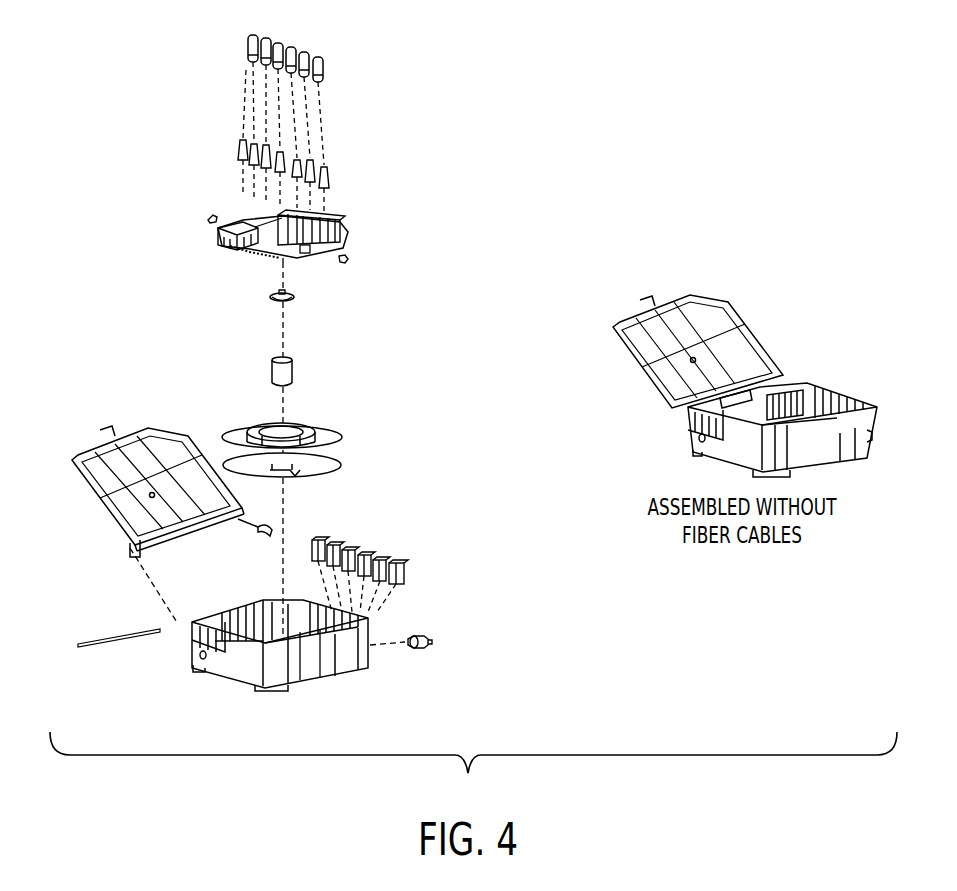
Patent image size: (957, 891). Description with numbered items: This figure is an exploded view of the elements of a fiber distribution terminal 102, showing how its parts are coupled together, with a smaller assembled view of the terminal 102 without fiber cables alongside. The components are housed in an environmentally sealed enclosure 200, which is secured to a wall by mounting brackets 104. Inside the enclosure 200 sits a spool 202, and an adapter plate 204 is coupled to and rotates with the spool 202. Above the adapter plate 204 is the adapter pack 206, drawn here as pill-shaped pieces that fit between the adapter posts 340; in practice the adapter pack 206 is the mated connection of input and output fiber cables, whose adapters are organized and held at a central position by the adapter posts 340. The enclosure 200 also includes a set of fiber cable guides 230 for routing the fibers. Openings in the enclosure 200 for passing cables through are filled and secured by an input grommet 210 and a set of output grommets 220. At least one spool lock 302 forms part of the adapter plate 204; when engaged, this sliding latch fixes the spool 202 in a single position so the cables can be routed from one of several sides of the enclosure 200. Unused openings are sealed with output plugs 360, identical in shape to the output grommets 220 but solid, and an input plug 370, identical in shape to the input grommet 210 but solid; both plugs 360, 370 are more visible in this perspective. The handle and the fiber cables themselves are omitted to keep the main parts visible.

The fiber distribution terminal 102 is at (817, 298).
The mounting brackets 104 is at (368, 670).
The enclosure 200 is at (350, 667).
The spool 202 is at (322, 421).
The adapter plate 204 is at (350, 242).
The adapter pack 206 is at (323, 63).
The input grommet 210 is at (432, 637).
The output grommets 220 is at (401, 562).
The fiber cable guides 230 is at (341, 220).
The spool lock 302 is at (208, 219).
The adapter posts 340 is at (329, 172).
The output plugs 360 is at (188, 635).
The input plug 370 is at (199, 656).